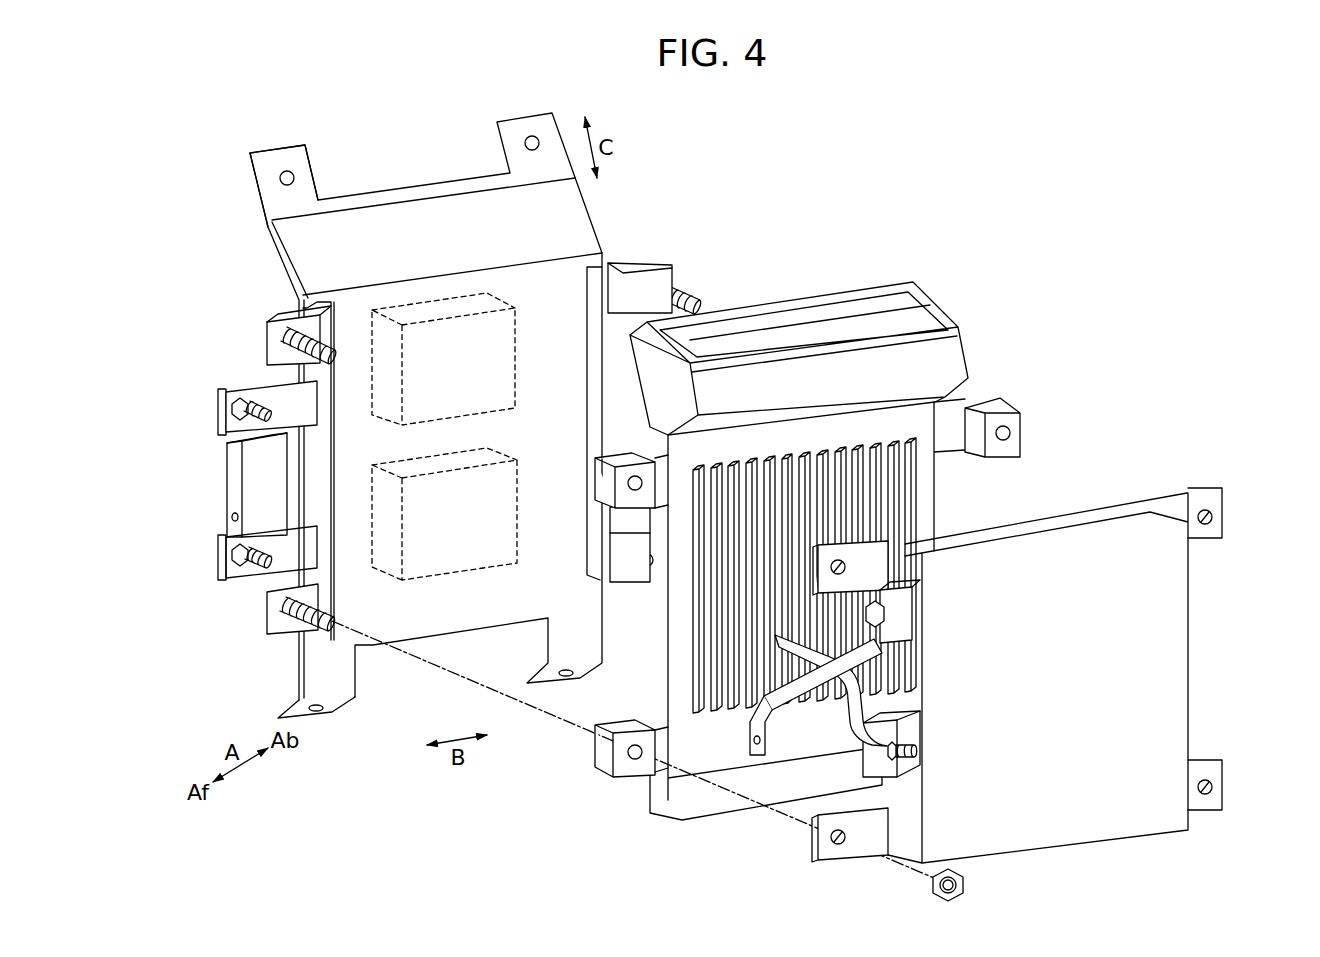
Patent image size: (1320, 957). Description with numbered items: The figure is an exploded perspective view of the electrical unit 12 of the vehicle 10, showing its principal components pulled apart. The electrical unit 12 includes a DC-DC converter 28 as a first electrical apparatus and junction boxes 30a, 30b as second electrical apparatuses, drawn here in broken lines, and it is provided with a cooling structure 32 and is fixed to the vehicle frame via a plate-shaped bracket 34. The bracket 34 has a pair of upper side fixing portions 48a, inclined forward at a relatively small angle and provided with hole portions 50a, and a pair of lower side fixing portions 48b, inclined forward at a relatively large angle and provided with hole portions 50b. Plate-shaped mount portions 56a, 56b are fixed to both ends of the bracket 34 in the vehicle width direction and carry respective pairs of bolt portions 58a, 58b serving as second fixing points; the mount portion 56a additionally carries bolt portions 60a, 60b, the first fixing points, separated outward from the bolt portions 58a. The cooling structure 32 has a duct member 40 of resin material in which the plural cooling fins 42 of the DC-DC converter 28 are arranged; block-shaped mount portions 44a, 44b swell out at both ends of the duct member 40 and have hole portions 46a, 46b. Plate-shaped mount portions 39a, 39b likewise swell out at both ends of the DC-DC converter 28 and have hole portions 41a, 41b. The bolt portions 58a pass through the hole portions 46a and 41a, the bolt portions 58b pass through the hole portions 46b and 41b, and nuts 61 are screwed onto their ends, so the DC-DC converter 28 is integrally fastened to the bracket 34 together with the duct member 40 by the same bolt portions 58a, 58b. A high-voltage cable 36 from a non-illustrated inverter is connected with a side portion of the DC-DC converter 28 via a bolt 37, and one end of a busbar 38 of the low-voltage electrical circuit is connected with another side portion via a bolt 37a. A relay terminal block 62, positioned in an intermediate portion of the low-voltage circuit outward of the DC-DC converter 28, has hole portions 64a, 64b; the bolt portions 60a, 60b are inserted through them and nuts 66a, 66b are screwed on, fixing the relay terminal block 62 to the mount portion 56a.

The electric power supply device 10 is at (921, 184).
The electrical unit 12 is at (863, 184).
The DC-DC converter 28 is at (1142, 500).
The junction box 30a is at (458, 557).
The junction box 30b is at (437, 407).
The cooling structure 32 is at (975, 350).
The bracket 34 is at (586, 200).
The high-voltage cable 36 is at (847, 722).
The bolt 37 is at (917, 758).
The bolt 37a is at (885, 621).
The busbar 38 is at (750, 728).
The mount portion 39a is at (875, 560).
The mount portion 39b is at (1205, 797).
The duct member 40 is at (802, 432).
The hole portion 41a is at (848, 568).
The hole portion 41b is at (1220, 773).
The cooling fins 42 is at (900, 481).
The mount portion 44a is at (604, 493).
The mount portion 44b is at (1003, 407).
The hole portion 46a is at (633, 483).
The hole portion 46b is at (1010, 435).
The upper side fixing portion 48a is at (265, 168).
The lower side fixing portion 48b is at (293, 708).
The hole portion 50a is at (293, 176).
The hole portion 50b is at (322, 712).
The mount portion 56a is at (245, 342).
The mount portion 56b is at (643, 260).
The bolt portion 58a is at (287, 332).
The bolt portion 58b is at (693, 290).
The bolt portion 60a is at (233, 410).
The bolt portion 60b is at (258, 577).
The nut 61 is at (963, 882).
The relay terminal block 62 is at (226, 494).
The hole portion 64a is at (243, 392).
The hole portion 64b is at (230, 556).
The nut 66a is at (230, 412).
The nut 66b is at (230, 560).